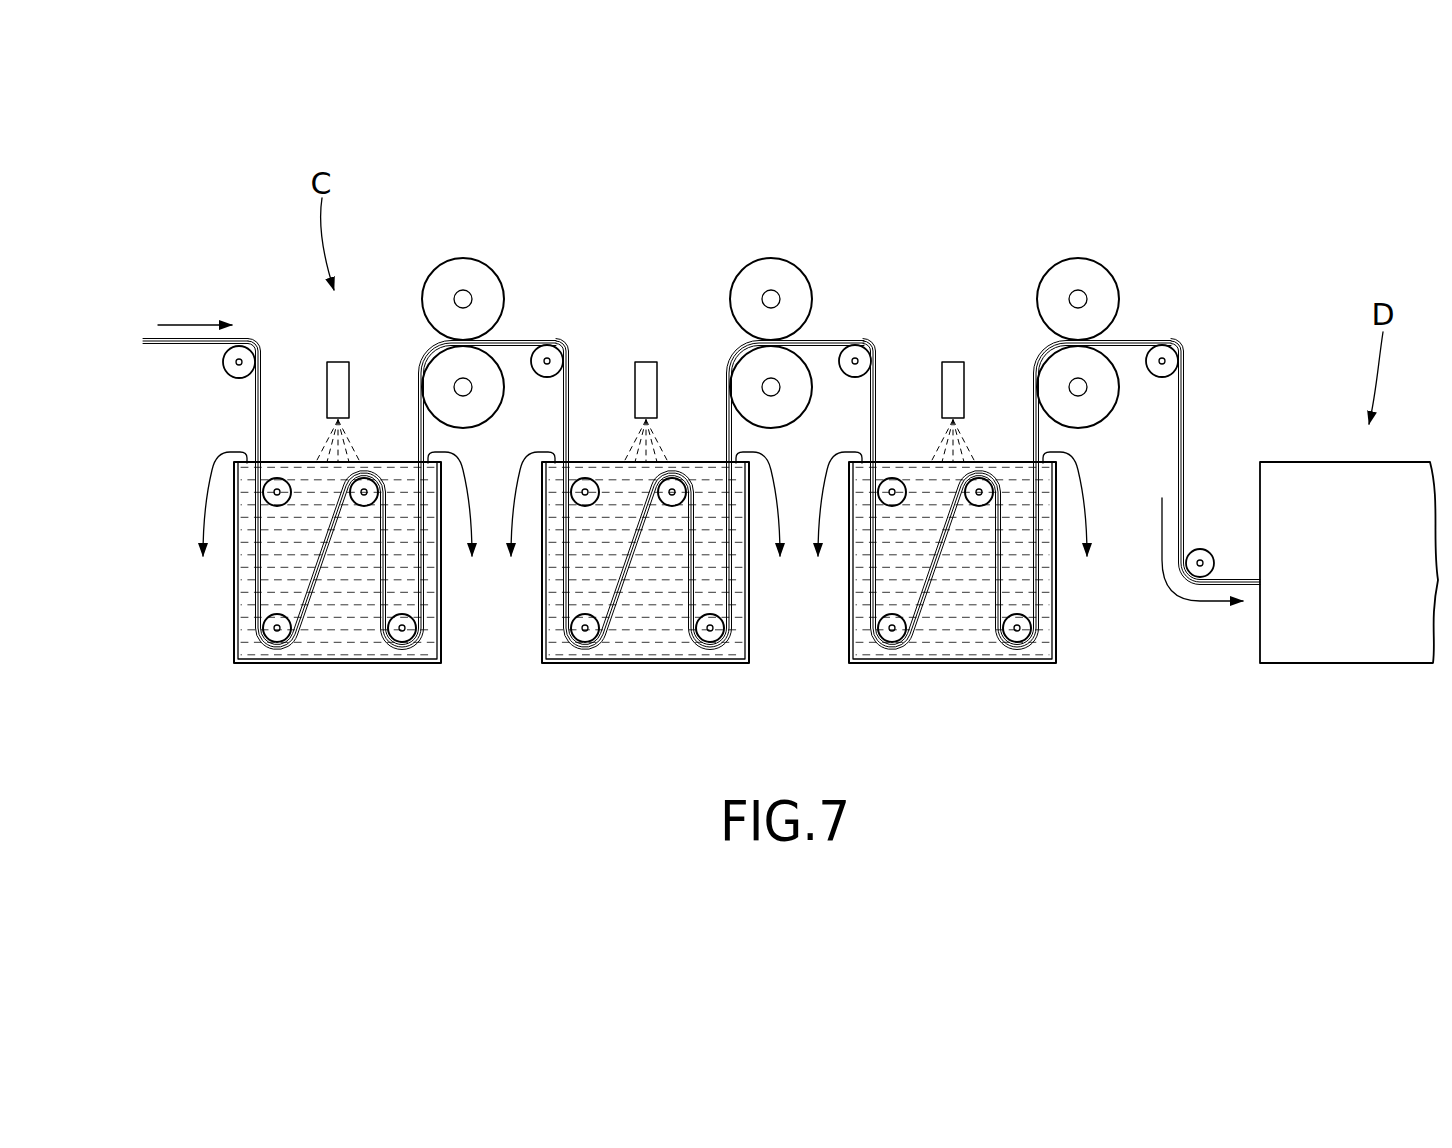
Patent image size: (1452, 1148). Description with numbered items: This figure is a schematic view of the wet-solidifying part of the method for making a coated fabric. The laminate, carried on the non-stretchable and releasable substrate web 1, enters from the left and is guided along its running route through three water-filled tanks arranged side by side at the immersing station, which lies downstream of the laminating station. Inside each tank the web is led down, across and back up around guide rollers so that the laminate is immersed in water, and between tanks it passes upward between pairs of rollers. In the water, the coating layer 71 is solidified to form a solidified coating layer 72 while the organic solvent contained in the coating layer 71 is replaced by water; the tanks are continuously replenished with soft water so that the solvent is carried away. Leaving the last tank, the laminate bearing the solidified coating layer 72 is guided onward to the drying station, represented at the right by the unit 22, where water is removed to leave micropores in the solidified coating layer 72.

The non-stretchable and releasable substrate web 1 is at (256, 412).
The take-up / downstream unit 22 is at (1342, 653).
The coating layer 71 is at (255, 338).
The solidified coating layer 72 is at (1185, 385).